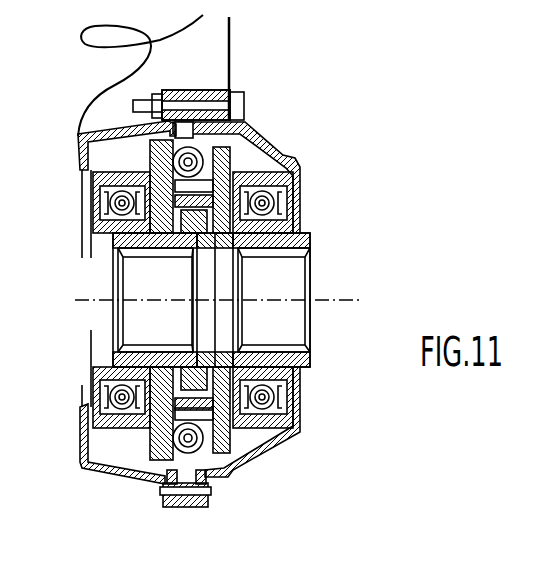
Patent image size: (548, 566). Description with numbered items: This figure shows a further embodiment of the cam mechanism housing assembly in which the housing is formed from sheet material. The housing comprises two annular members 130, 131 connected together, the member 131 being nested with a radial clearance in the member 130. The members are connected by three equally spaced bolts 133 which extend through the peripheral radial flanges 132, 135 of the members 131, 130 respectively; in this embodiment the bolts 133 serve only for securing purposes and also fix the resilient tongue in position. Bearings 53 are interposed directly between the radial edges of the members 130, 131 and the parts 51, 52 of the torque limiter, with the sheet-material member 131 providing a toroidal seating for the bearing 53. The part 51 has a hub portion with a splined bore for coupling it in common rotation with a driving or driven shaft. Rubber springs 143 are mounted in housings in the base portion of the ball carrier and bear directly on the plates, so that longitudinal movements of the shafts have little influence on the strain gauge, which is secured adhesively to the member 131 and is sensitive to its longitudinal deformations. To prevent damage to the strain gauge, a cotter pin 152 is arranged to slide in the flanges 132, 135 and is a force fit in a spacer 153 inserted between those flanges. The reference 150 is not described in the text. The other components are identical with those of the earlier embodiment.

The part of the torque limiter 51 is at (97, 329).
The part of the torque limiter 52 is at (318, 278).
The bearing 53 is at (90, 233).
The annular member 130 is at (294, 152).
The annular member 131 is at (80, 157).
The radial flange 132 is at (167, 478).
The bolt 133 is at (244, 100).
The radial flange 135 is at (210, 475).
The rubber spring 143 is at (87, 279).
The seal 150 is at (82, 187).
The cotter pin 152 is at (167, 500).
The spacer 153 is at (193, 510).